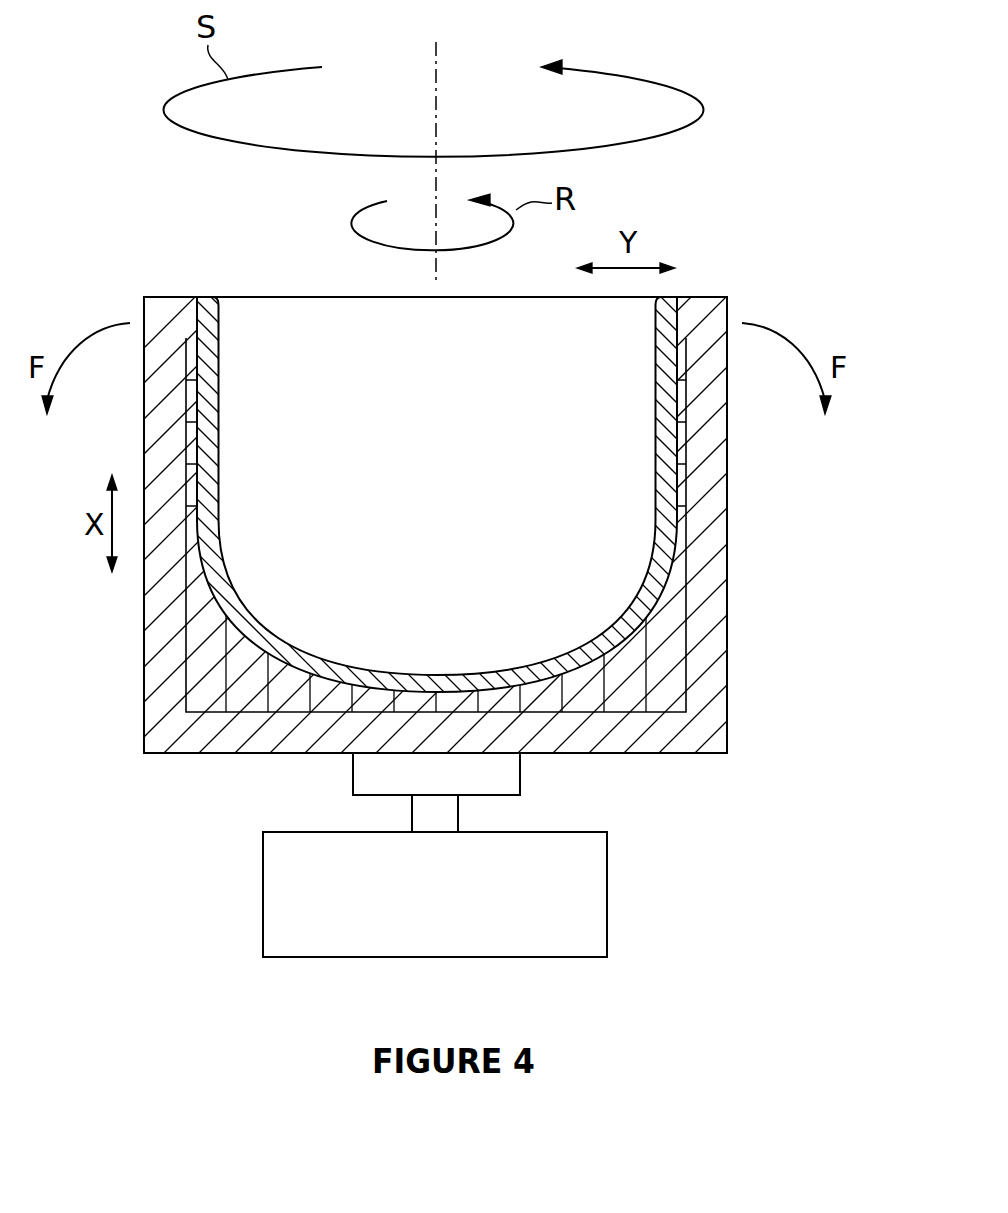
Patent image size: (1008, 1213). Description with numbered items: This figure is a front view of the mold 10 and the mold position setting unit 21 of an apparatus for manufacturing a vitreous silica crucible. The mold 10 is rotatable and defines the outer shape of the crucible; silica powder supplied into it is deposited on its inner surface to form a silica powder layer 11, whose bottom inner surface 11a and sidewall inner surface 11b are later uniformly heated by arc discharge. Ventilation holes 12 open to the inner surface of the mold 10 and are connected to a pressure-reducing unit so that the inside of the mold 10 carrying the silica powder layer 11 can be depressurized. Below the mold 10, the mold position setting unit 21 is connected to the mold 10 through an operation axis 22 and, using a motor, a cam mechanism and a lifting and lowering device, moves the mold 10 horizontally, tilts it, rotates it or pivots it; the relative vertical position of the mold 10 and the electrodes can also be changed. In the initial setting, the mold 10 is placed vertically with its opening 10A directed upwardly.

The mold 10 is at (727, 710).
The opening 10A is at (278, 297).
The silica powder layer 11 is at (504, 514).
The bottom inner surface 11a is at (452, 673).
The sidewall inner surface 11b is at (680, 492).
The ventilation holes 12 is at (186, 673).
The mold position setting unit 21 is at (263, 888).
The operation axis 22 is at (412, 811).